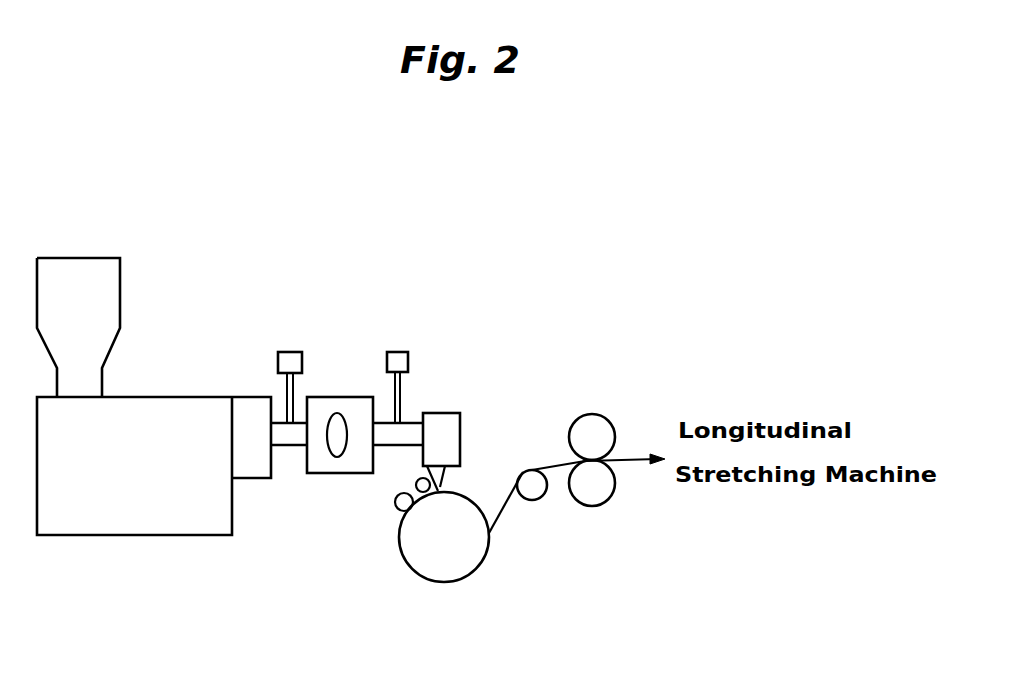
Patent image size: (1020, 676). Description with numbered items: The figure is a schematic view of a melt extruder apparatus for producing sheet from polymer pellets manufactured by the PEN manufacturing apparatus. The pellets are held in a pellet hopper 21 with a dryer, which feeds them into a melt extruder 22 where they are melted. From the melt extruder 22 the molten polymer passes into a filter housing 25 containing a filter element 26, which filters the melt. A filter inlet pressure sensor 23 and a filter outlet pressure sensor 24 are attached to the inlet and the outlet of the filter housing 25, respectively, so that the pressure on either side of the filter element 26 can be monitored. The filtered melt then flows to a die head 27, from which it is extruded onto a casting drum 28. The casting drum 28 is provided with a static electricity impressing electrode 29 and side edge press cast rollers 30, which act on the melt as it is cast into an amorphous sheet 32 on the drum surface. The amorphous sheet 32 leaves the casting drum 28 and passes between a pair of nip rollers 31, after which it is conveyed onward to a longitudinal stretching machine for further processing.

The pellet hopper with dryer 21 is at (121, 270).
The melt extruder 22 is at (178, 537).
The filter inlet pressure sensor 23 is at (279, 355).
The filter outlet pressure sensor 24 is at (405, 352).
The filter housing 25 is at (336, 397).
The filter element 26 is at (335, 457).
The die head 27 is at (449, 413).
The casting drum 28 is at (477, 572).
The static electricity impressing electrode 29 is at (430, 463).
The side edge press cast roller 30 is at (400, 510).
The nip roller 31 is at (590, 413).
The amorphous sheet 32 is at (632, 463).